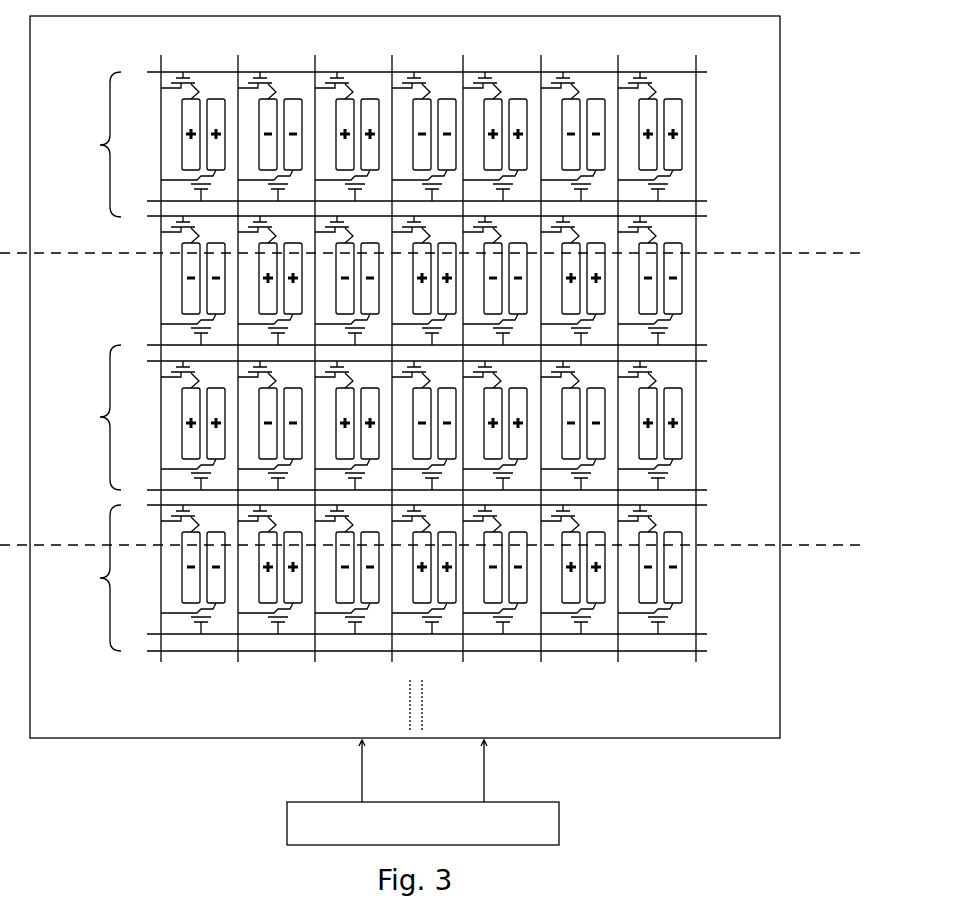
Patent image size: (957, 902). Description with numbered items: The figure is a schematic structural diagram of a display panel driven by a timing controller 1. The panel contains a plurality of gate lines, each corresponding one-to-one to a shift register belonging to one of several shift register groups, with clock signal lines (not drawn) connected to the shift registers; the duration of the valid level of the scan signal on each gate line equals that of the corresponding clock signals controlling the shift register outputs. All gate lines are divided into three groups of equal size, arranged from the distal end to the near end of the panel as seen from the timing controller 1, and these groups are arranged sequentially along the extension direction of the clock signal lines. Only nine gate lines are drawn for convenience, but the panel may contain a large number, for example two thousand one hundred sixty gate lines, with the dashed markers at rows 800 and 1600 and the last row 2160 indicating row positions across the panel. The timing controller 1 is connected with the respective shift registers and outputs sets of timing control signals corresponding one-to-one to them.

The timing controller 1 is at (559, 802).
The 800th pixel row boundary 800 is at (432, 237).
The 1600th pixel row boundary 1600 is at (432, 531).
The 2160th pixel row (near end) 2160 is at (831, 733).